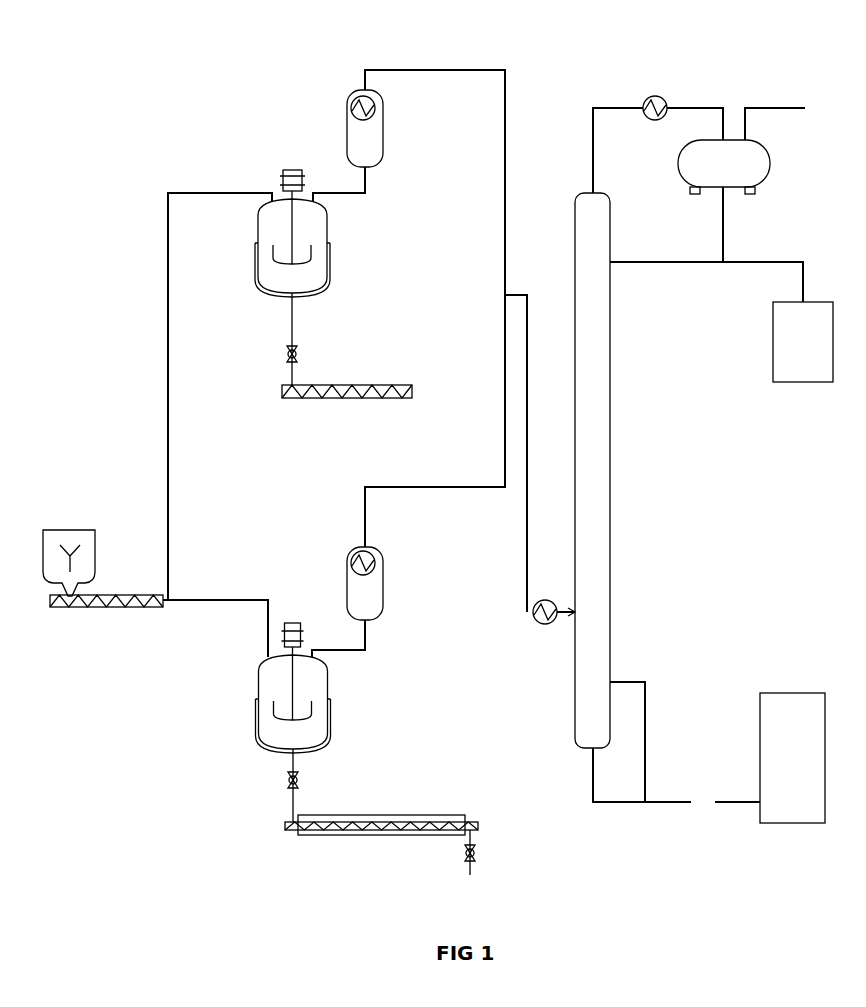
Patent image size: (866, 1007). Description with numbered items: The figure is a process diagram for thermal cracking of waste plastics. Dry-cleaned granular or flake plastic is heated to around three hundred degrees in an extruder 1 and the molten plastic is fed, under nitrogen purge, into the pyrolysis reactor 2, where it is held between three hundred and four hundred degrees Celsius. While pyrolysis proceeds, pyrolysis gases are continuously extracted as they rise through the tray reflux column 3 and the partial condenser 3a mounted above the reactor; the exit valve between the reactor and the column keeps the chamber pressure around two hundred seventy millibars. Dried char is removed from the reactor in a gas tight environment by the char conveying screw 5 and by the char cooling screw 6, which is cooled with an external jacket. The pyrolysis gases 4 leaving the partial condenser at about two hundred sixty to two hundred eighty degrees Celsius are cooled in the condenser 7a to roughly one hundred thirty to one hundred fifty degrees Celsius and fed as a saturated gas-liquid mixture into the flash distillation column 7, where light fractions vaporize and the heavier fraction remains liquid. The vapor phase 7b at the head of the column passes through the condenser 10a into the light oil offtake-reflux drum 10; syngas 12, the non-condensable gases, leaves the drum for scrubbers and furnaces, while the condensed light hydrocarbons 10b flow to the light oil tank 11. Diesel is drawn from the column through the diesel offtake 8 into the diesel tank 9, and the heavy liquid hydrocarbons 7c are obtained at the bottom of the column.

The extruder 1 is at (112, 610).
The pyrolysis reactor 2 is at (330, 708).
The tray reflux column 3 is at (347, 122).
The partial condenser 3a is at (376, 108).
The pyrolysis gases 4 is at (505, 310).
The char conveying screw 5 is at (377, 385).
The char cooling screw 6 is at (398, 835).
The flash distillation column 7 is at (612, 583).
The condenser 7a is at (540, 620).
The vapor phase 7b is at (593, 153).
The heavy liquid hydrocarbons 7c is at (593, 780).
The diesel offtake 8 is at (660, 800).
The diesel tank 9 is at (790, 693).
The light oil offtake-reflux drum 10 is at (770, 163).
The condenser 10a is at (645, 100).
The condensed light hydrocarbons 10b is at (723, 207).
The light oil tank 11 is at (773, 342).
The syngas 12 is at (790, 105).